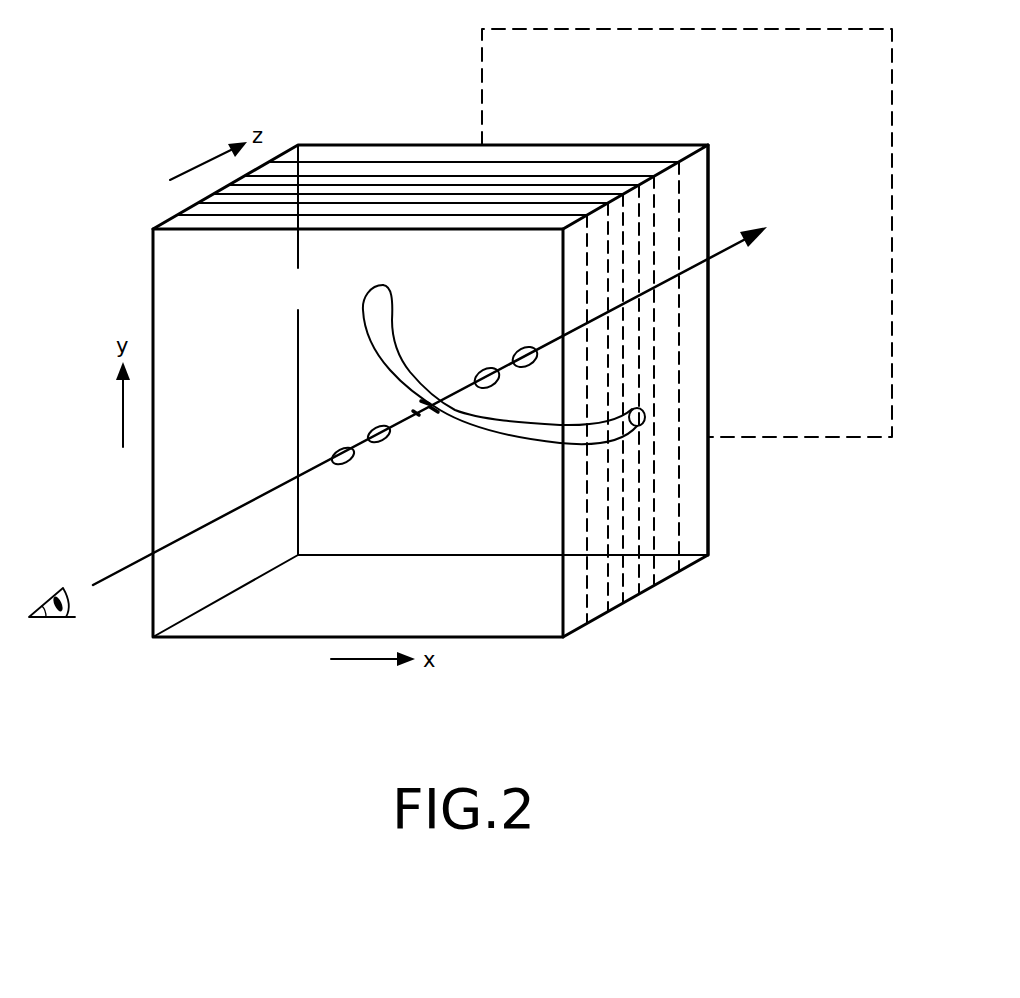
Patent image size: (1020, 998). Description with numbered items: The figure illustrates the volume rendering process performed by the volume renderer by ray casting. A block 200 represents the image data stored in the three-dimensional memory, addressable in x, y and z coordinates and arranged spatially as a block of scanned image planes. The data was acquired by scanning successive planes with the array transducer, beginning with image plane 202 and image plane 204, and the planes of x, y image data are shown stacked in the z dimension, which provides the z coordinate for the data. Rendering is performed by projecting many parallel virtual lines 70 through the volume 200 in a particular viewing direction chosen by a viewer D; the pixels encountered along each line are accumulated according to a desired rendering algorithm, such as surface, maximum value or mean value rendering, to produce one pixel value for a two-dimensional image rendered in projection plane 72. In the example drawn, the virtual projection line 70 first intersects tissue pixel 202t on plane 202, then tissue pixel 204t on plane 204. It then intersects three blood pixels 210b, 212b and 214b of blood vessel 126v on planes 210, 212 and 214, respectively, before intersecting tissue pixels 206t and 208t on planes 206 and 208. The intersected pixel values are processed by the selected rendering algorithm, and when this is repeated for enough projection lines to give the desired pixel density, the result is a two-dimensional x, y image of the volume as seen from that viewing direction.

The projection plane 72 is at (482, 79).
The block of image data 200 is at (168, 289).
The virtual projection line 70 is at (222, 515).
The blood vessel 126v is at (372, 307).
The image plane 202 is at (600, 620).
The image plane 204 is at (625, 592).
The image plane 210 is at (638, 572).
The image plane 212 is at (655, 560).
The image plane 214 is at (675, 552).
The image plane 206 is at (705, 557).
The image plane 208 is at (710, 487).
The tissue pixel 202t is at (347, 468).
The tissue pixel 204t is at (390, 442).
The tissue pixel 206t is at (494, 385).
The tissue pixel 208t is at (523, 348).
The blood pixel 210b is at (415, 412).
The blood pixel 212b is at (432, 414).
The blood pixel 214b is at (440, 398).
The viewer D is at (63, 620).